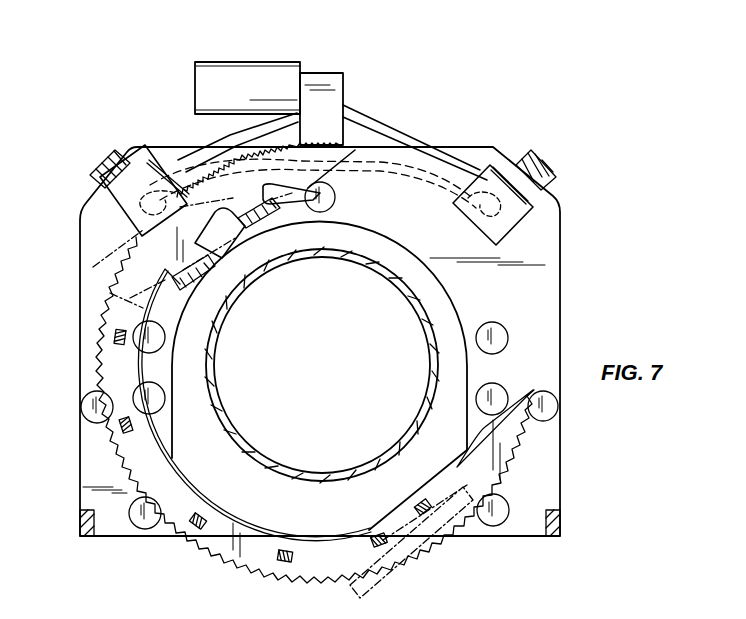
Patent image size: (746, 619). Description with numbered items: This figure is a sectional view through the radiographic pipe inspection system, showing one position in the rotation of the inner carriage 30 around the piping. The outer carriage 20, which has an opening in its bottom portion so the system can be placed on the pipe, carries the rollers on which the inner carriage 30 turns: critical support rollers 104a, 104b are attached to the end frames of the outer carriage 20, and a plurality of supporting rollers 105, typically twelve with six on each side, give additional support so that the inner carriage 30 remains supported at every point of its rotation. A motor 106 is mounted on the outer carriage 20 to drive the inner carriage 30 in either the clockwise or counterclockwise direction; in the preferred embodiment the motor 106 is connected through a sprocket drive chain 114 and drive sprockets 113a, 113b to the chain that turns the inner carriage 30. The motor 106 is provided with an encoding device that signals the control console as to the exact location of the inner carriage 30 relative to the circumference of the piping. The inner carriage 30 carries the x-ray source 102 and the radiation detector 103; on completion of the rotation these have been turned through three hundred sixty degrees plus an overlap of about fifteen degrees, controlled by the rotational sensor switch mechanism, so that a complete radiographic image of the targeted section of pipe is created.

The outer carriage 20 is at (563, 497).
The inner carriage 30 is at (257, 578).
The x-ray source 102 is at (93, 266).
The radiation detector 103 is at (386, 589).
The critical support roller 104a is at (489, 527).
The critical support roller 104b is at (147, 530).
The supporting rollers 105 is at (557, 413).
The motor for inner carriage rotation 106 is at (230, 62).
The driving sprocket 113a is at (157, 187).
The driving sprocket 113b is at (534, 207).
The sprocket drive chain 114 is at (386, 128).